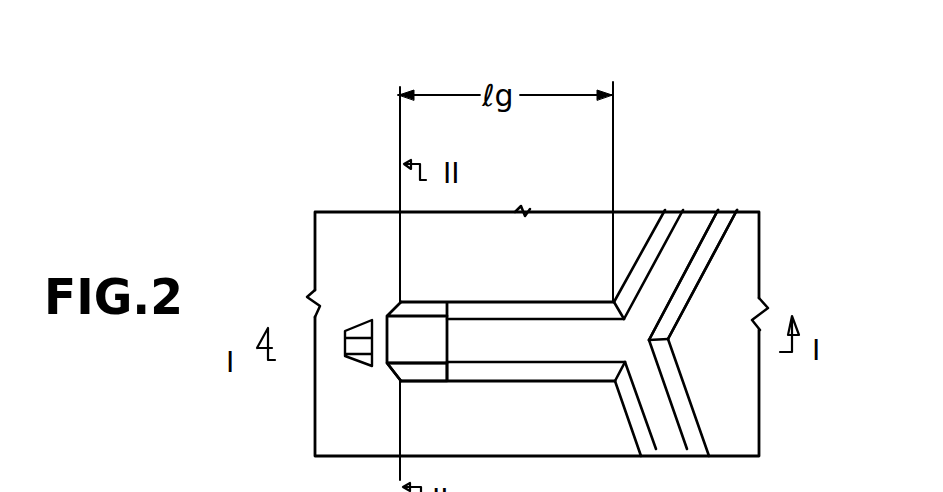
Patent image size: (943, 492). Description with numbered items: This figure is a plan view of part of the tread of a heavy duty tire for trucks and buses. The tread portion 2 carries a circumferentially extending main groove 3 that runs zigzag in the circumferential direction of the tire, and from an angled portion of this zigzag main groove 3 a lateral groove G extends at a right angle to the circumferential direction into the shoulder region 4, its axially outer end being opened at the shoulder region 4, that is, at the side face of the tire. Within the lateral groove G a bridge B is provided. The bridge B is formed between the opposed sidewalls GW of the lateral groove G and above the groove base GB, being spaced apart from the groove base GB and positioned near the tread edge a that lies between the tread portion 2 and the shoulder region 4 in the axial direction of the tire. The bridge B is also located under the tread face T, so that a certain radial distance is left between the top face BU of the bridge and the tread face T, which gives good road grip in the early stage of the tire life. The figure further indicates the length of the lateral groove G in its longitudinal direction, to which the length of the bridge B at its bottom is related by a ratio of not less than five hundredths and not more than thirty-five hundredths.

The tread face T is at (738, 260).
The lateral groove G is at (506, 316).
The groove base GB is at (485, 338).
The sidewalls GW is at (588, 308).
The main groove 3 is at (663, 268).
The bridge B is at (378, 318).
The top face of the bridge BU is at (405, 357).
The tread edge a is at (400, 252).
The shoulder region 4 is at (325, 412).
The tread portion 2 is at (782, 491).